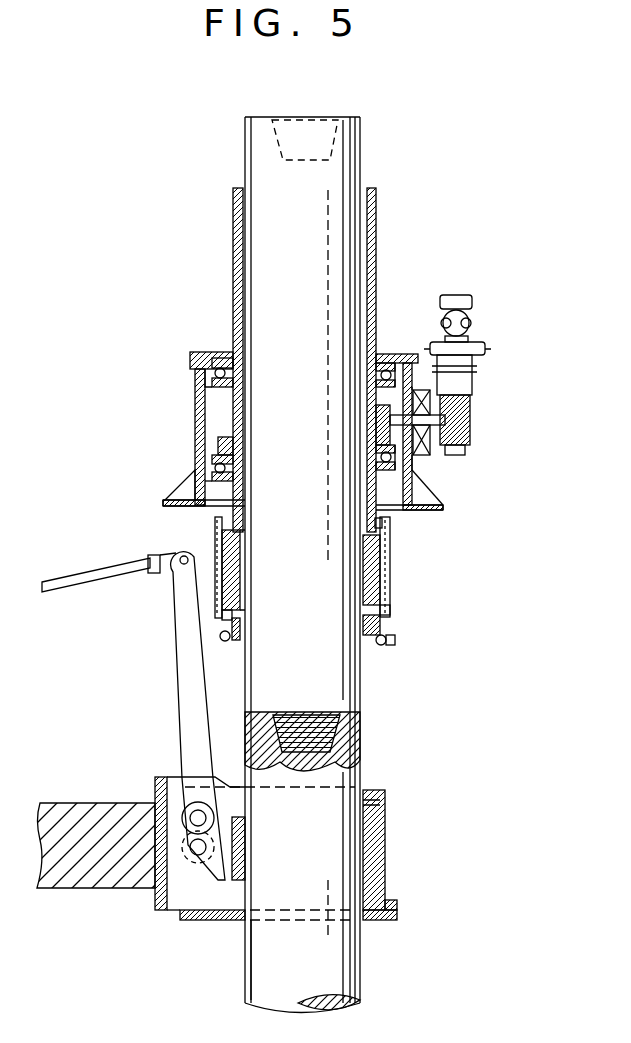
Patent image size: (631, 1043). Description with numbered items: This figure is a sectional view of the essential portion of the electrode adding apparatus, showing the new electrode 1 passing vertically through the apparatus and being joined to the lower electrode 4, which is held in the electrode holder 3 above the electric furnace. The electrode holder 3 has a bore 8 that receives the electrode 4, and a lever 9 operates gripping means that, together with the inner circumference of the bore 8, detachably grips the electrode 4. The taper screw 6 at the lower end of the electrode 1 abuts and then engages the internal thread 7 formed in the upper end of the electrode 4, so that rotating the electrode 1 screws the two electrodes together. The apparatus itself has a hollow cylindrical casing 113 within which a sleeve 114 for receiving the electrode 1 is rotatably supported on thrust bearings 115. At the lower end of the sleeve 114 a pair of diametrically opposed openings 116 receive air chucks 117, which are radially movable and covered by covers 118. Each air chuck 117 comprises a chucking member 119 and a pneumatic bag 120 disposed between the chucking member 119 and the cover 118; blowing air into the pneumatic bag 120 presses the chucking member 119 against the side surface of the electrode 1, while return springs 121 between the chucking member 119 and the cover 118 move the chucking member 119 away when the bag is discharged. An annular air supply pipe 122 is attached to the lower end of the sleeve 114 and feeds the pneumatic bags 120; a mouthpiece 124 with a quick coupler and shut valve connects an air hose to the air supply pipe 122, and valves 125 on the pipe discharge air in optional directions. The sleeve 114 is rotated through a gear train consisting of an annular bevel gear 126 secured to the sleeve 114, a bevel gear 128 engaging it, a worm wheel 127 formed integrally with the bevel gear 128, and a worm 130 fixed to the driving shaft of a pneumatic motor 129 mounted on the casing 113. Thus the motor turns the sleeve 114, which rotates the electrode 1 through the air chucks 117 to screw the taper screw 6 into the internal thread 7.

The electrode 1 is at (347, 160).
The electrode holder 3 is at (378, 892).
The electrode 4 is at (340, 975).
The taper screw 6 is at (335, 740).
The internal thread 7 is at (290, 740).
The bore 8 is at (372, 800).
The lever 9 is at (188, 722).
The casing 113 is at (412, 490).
The sleeve 114 is at (376, 258).
The thrust bearings 115 is at (213, 378).
The openings 116 is at (390, 555).
The air chucks 117 is at (199, 541).
The cover 118 is at (388, 612).
The chucking member 119 is at (370, 568).
The pneumatic bag 120 is at (390, 575).
The return springs 121 is at (382, 520).
The air supply pipe 122 is at (383, 640).
The mouthpiece 124 is at (392, 645).
The valves 125 is at (222, 625).
The annular bevel gear 126 is at (233, 445).
The worm wheel 127 is at (470, 422).
The bevel gear 128 is at (386, 368).
The pneumatic motor 129 is at (478, 350).
The worm 130 is at (465, 450).